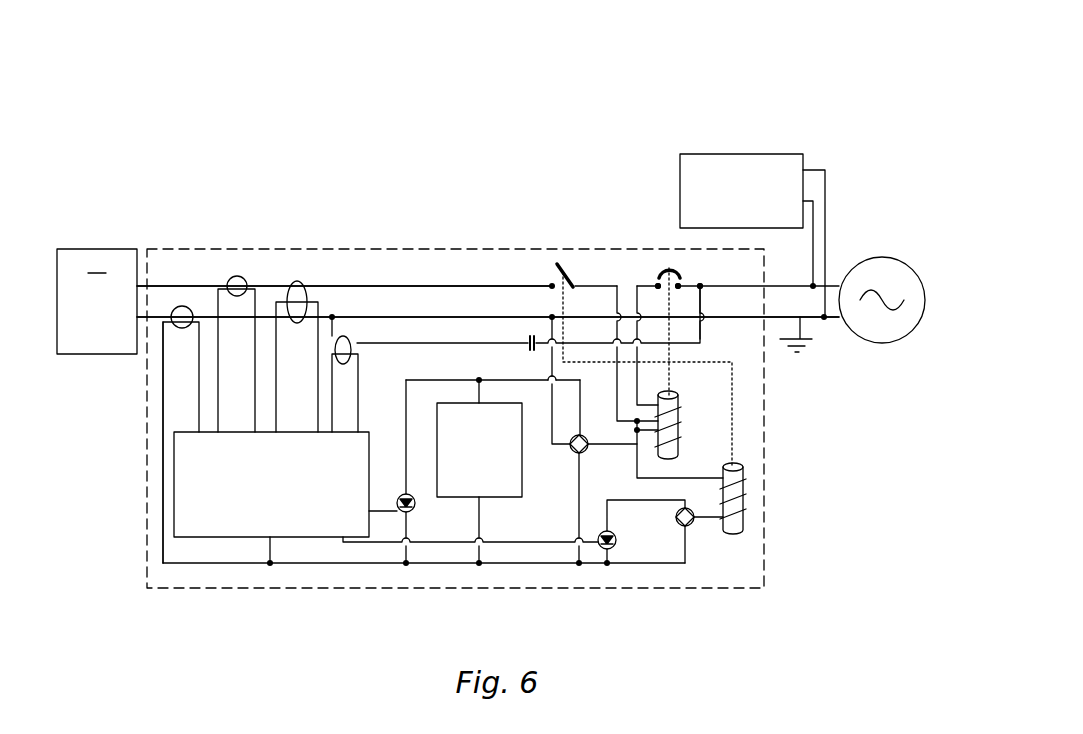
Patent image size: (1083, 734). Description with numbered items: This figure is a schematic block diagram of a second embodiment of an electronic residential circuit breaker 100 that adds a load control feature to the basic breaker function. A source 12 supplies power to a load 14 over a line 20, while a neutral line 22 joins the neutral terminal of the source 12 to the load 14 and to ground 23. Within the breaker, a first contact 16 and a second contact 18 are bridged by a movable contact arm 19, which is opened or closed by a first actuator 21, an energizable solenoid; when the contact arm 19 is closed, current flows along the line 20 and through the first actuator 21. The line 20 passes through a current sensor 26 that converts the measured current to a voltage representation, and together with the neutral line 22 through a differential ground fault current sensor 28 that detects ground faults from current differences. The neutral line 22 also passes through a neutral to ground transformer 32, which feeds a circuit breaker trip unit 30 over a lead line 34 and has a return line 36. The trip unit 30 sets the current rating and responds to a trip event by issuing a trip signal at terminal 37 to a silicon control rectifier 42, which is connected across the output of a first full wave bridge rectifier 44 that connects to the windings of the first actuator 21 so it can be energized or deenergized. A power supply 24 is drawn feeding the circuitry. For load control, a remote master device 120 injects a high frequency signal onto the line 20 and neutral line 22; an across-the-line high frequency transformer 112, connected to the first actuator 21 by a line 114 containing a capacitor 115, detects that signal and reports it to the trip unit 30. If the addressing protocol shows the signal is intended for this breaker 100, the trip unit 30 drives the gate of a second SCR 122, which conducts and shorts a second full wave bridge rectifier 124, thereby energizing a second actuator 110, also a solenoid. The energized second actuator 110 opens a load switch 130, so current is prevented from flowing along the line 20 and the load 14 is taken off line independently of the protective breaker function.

The source 12 is at (883, 343).
The load 14 is at (97, 301).
The first contact 16 is at (682, 282).
The second contact 18 is at (655, 283).
The movable contact arm 19 is at (668, 267).
The line 20 is at (428, 286).
The first actuator 21 is at (681, 421).
The neutral line 22 is at (367, 318).
The ground 23 is at (800, 354).
The power supply 24 is at (512, 498).
The current sensor 26 is at (238, 276).
The differential ground fault current sensor 28 is at (298, 281).
The circuit breaker trip unit 30 is at (365, 432).
The neutral to ground transformer 32 is at (182, 306).
The lead line 34 is at (199, 398).
The return line 36 is at (163, 481).
The terminal 37 is at (372, 511).
The silicon control rectifier 42 is at (415, 506).
The first full wave bridge rectifier 44 is at (596, 457).
The electronic residential circuit breaker 100 is at (408, 248).
The second actuator 110 is at (744, 497).
The high frequency transformer 112 is at (343, 336).
The line 114 is at (472, 344).
The capacitor 115 is at (527, 342).
The remote master device 120 is at (680, 171).
The second SCR 122 is at (617, 535).
The second full wave bridge rectifier 124 is at (695, 532).
The load switch 130 is at (563, 262).